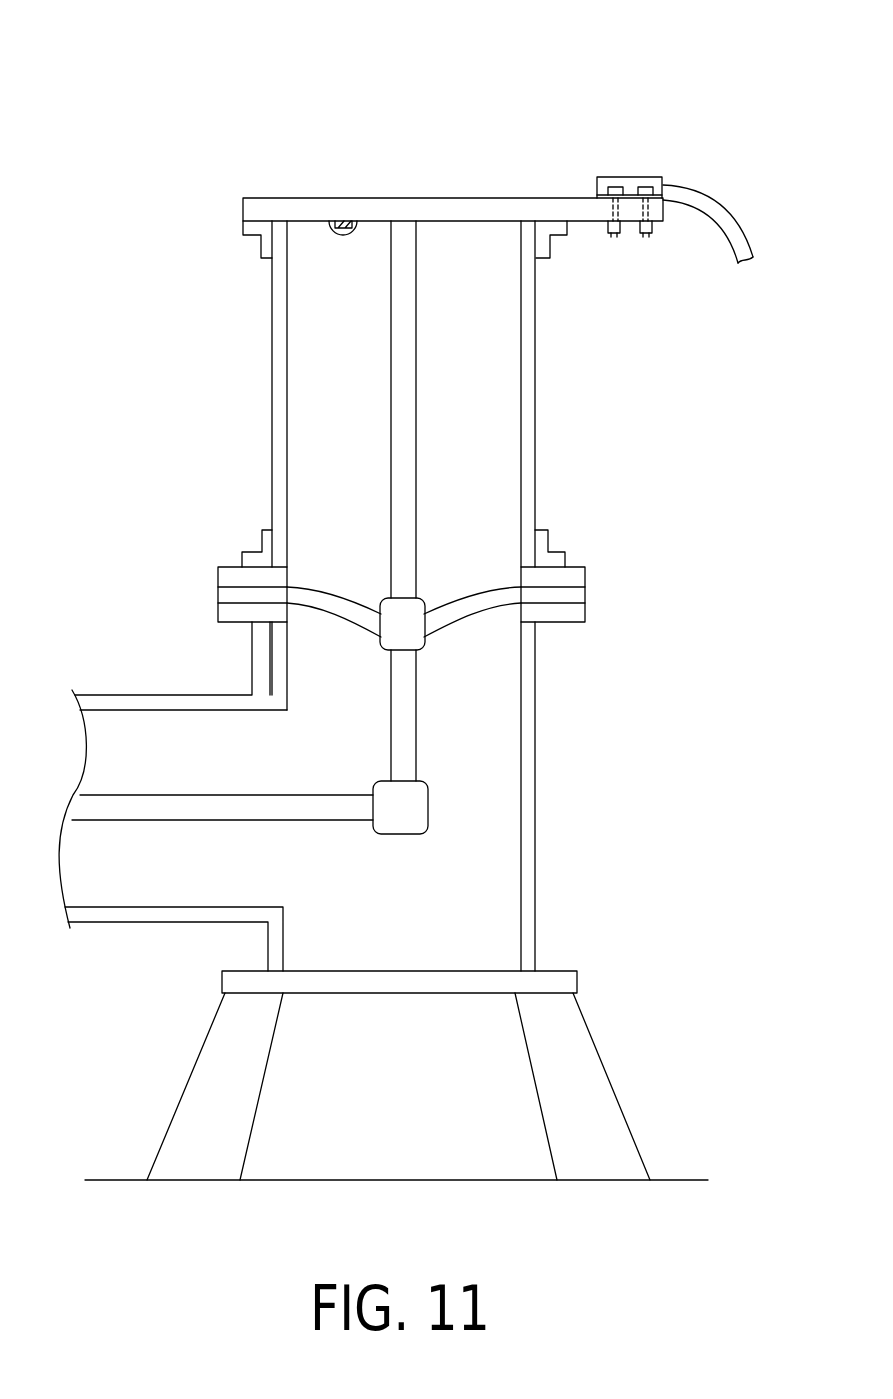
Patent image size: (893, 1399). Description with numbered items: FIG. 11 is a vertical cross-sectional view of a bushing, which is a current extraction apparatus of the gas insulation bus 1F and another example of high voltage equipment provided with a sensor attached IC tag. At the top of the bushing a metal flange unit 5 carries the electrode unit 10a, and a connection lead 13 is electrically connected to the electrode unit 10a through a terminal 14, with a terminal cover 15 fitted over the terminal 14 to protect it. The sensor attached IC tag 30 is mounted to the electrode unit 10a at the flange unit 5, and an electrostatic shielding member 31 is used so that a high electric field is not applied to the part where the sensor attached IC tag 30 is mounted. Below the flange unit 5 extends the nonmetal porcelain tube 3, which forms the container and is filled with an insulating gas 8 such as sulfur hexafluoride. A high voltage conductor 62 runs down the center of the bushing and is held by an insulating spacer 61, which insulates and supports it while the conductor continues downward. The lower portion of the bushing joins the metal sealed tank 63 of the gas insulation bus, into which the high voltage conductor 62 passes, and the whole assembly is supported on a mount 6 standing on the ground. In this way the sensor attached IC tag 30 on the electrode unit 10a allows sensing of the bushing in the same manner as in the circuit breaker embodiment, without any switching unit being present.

The gas insulation bus (bushing) 1F is at (517, 77).
The flange unit 5 is at (452, 198).
The electrode unit 10a is at (601, 153).
The terminal cover 15 is at (630, 177).
The terminal 14 is at (660, 235).
The connection lead 13 is at (736, 222).
The sensor attached IC tag 30 is at (340, 198).
The electrostatic shielding member 31 is at (352, 198).
The porcelain tube 3 is at (272, 362).
The high voltage conductor 62 is at (390, 408).
The insulating gas 8 is at (462, 422).
The insulating spacer 61 is at (587, 593).
The metal sealed tank 63 is at (252, 660).
The mount 6 is at (180, 1095).